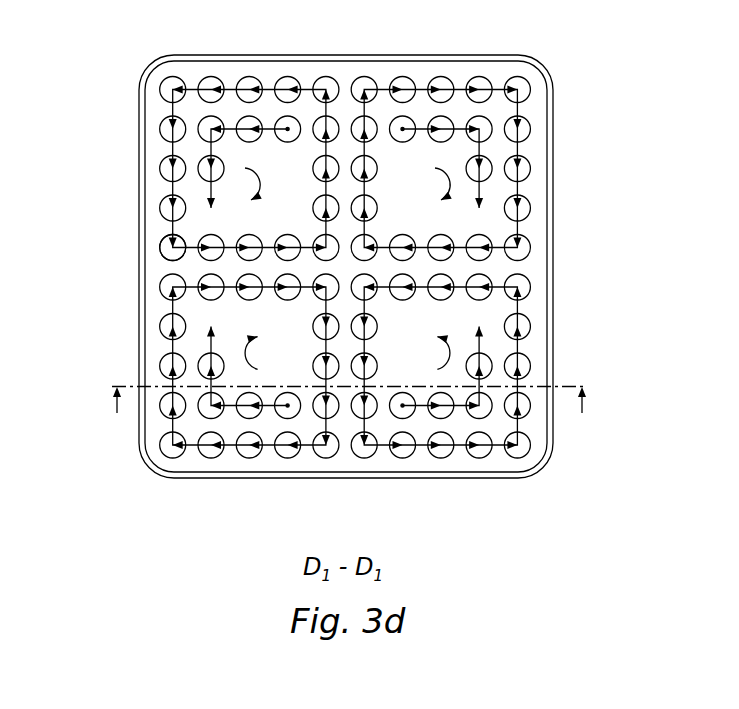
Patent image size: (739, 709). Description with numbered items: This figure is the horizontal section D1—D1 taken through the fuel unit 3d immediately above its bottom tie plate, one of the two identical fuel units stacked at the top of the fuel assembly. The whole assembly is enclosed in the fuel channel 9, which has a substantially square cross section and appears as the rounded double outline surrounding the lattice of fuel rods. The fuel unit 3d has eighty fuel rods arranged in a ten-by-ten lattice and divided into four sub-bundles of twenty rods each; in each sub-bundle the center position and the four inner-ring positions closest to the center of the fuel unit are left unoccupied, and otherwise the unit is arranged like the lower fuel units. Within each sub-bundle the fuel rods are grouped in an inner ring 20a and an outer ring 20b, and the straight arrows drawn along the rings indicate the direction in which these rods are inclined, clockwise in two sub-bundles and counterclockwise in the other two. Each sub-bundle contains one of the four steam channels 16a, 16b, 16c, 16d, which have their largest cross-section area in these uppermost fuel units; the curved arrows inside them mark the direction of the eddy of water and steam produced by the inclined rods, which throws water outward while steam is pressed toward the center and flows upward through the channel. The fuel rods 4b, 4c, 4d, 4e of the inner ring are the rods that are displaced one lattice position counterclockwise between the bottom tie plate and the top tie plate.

The fuel unit 3d is at (308, 54).
The fuel channel 9 is at (553, 196).
The steam channel 16a is at (268, 355).
The steam channel 16b is at (486, 408).
The steam channel 16c is at (416, 174).
The steam channel 16d is at (200, 169).
The inner ring 20a is at (202, 173).
The outer ring 20b is at (158, 239).
The fuel rod 4b is at (407, 412).
The fuel rod 4c is at (447, 412).
The fuel rod 4d is at (487, 412).
The fuel rod 4e is at (485, 362).